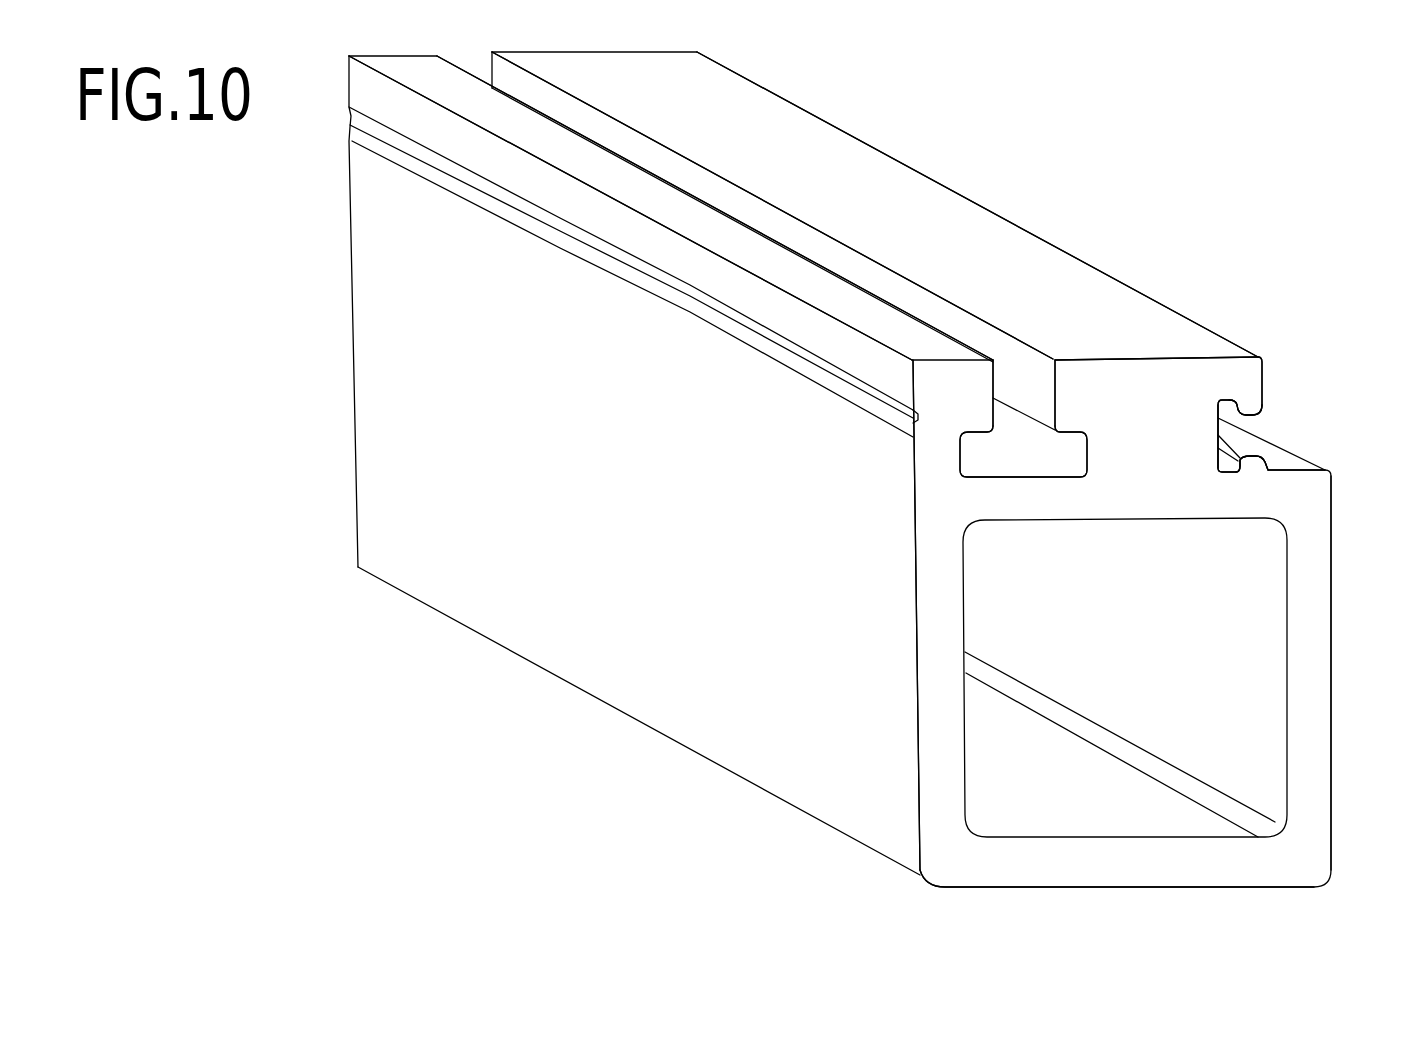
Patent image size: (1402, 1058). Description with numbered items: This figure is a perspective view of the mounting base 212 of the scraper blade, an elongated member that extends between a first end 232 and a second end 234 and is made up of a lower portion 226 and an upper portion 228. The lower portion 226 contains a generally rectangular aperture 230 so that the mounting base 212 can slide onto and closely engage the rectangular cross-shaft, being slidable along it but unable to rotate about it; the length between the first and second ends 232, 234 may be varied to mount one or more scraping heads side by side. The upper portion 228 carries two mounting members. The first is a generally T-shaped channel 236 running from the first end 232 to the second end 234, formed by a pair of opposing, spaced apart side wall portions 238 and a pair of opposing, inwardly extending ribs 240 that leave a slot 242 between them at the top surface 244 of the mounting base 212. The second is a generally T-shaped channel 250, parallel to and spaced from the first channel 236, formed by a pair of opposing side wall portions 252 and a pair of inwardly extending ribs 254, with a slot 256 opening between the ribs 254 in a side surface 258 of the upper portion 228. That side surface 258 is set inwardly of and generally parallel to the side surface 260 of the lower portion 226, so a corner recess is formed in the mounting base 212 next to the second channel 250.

The mounting base 212 is at (1060, 220).
The lower portion 226 is at (935, 643).
The upper portion 228 is at (1155, 375).
The rectangular aperture 230 is at (1267, 748).
The first end 232 is at (920, 748).
The second end 234 is at (354, 362).
The first T-shaped channel 236 is at (973, 340).
The side wall portions 238 is at (1097, 447).
The inwardly extending ribs 240 is at (1065, 378).
The slot 242 is at (847, 258).
The top surface 244 is at (902, 188).
The second T-shaped channel 250 is at (1273, 423).
The side wall portions 252 is at (1212, 388).
The inwardly extending ribs 254 is at (1250, 400).
The slot 256 is at (1273, 437).
The side surface 258 is at (1263, 383).
The side surface 260 is at (1346, 614).